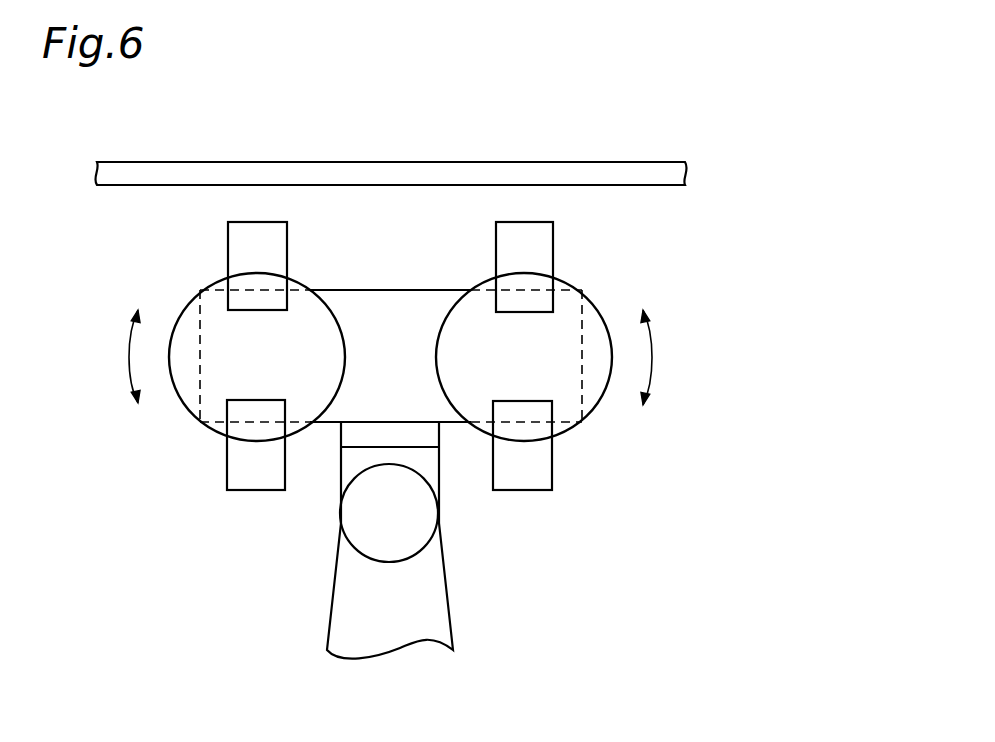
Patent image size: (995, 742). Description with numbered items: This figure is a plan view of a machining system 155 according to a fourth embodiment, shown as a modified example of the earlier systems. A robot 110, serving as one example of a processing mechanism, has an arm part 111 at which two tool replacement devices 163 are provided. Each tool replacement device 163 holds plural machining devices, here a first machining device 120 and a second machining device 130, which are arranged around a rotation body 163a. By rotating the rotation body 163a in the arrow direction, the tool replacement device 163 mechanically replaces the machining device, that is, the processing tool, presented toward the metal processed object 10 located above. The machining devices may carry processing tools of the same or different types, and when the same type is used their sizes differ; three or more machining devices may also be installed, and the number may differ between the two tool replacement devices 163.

The processed object 10 is at (553, 162).
The robot 110 is at (467, 598).
The arm part 111 is at (366, 390).
The first machining device 120 is at (228, 234).
The second machining device 130 is at (227, 470).
The machining system 155 is at (652, 528).
The tool replacement device 163 is at (173, 402).
The rotation body 163a is at (190, 320).